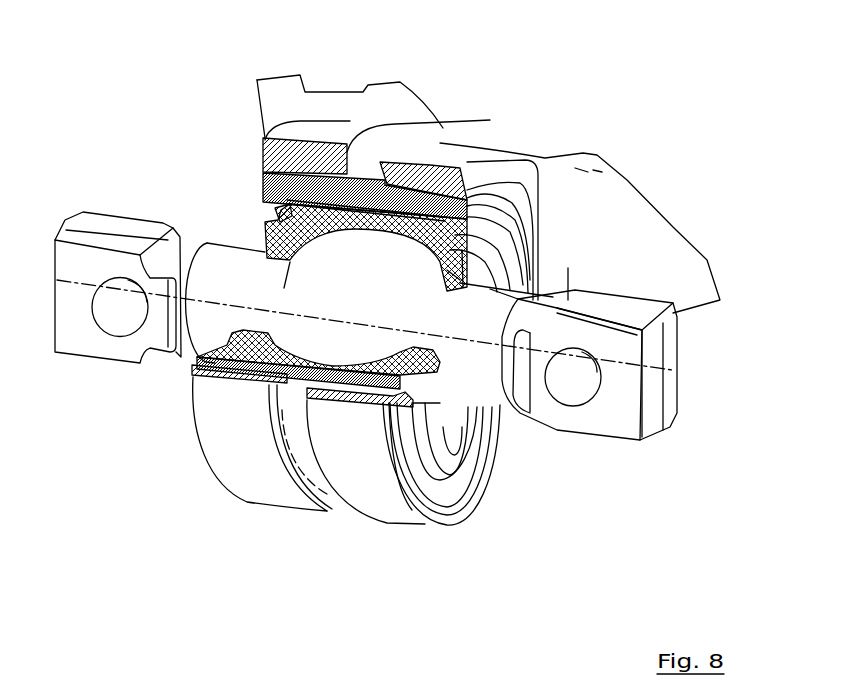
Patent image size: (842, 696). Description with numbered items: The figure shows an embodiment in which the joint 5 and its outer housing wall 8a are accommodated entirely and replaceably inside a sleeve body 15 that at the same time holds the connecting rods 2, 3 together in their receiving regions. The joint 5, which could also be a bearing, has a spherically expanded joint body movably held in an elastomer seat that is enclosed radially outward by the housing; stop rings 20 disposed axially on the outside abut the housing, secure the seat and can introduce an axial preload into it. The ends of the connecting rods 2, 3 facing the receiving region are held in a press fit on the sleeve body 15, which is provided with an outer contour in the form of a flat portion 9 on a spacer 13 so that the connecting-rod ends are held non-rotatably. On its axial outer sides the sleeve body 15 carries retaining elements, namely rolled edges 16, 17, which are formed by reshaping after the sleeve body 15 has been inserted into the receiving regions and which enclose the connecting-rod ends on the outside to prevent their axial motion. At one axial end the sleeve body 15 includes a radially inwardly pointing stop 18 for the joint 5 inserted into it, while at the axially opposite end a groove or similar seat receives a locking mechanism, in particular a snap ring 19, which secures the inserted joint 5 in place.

The connecting rod 2 is at (271, 98).
The connecting rod 3 is at (648, 222).
The joint 5 is at (472, 377).
The outer housing wall 8a is at (318, 202).
The flat portion 9 is at (369, 163).
The spacer 13 is at (308, 478).
The sleeve body 15 is at (363, 192).
The rolled edge 16 is at (262, 171).
The rolled edge 17 is at (490, 198).
The stop 18 is at (290, 202).
The snap ring 19 is at (438, 252).
The stop ring 20 is at (275, 219).